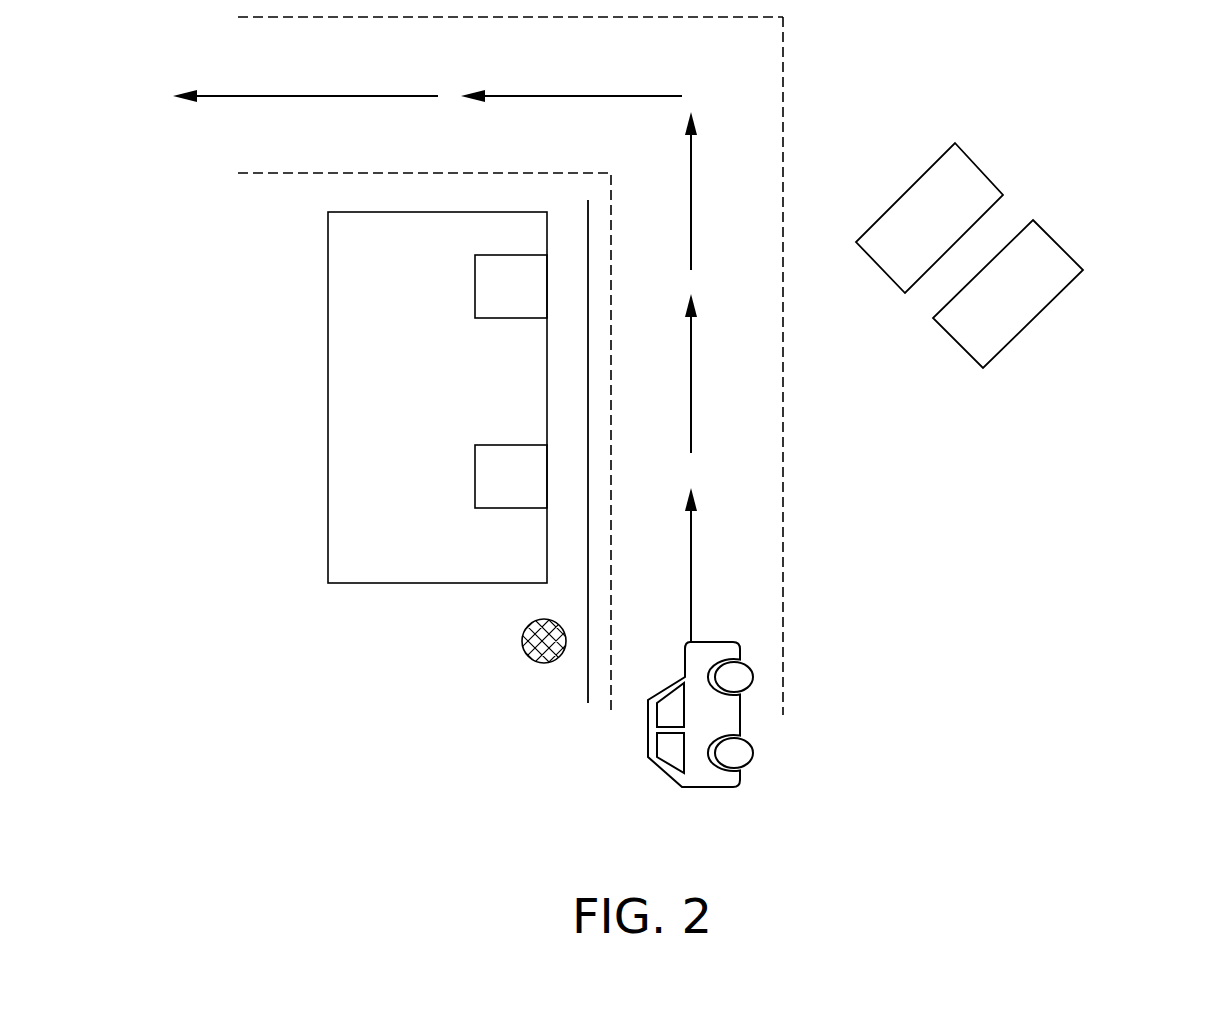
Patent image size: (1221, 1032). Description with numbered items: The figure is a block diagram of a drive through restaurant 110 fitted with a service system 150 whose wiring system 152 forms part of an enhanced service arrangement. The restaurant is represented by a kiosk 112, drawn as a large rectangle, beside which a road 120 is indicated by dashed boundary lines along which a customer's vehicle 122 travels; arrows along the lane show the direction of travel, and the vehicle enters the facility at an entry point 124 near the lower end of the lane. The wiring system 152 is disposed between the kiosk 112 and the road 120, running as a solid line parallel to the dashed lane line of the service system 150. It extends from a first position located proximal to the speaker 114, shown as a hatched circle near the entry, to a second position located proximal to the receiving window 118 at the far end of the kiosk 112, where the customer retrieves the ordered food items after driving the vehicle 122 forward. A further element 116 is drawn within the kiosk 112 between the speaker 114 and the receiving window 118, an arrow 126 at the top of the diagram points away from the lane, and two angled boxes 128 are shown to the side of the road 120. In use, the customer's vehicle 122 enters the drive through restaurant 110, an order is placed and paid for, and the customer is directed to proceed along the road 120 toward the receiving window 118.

The drive through restaurant 110 is at (1064, 150).
The kiosk 112 is at (398, 563).
The speaker 114 is at (522, 636).
The parking space 116 is at (488, 487).
The receiving window 118 is at (488, 298).
The road 120 is at (763, 106).
The vehicle 122 is at (715, 640).
The entry point 124 is at (786, 382).
The exit direction arrow 126 is at (405, 96).
The parking spaces 128 is at (908, 229).
The service system 150 is at (614, 203).
The wiring system 152 is at (575, 205).